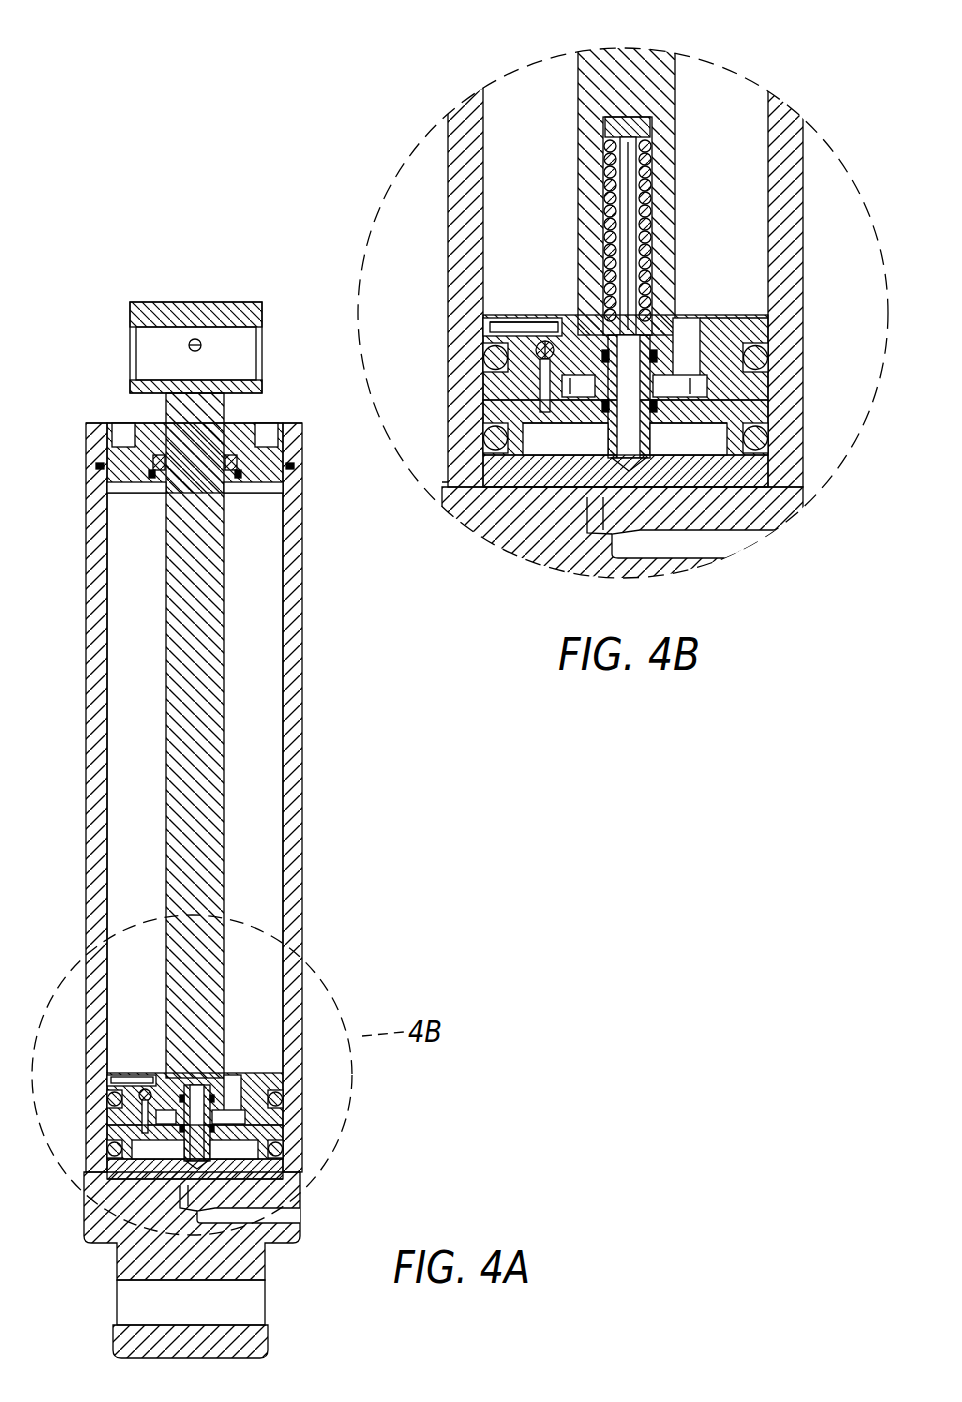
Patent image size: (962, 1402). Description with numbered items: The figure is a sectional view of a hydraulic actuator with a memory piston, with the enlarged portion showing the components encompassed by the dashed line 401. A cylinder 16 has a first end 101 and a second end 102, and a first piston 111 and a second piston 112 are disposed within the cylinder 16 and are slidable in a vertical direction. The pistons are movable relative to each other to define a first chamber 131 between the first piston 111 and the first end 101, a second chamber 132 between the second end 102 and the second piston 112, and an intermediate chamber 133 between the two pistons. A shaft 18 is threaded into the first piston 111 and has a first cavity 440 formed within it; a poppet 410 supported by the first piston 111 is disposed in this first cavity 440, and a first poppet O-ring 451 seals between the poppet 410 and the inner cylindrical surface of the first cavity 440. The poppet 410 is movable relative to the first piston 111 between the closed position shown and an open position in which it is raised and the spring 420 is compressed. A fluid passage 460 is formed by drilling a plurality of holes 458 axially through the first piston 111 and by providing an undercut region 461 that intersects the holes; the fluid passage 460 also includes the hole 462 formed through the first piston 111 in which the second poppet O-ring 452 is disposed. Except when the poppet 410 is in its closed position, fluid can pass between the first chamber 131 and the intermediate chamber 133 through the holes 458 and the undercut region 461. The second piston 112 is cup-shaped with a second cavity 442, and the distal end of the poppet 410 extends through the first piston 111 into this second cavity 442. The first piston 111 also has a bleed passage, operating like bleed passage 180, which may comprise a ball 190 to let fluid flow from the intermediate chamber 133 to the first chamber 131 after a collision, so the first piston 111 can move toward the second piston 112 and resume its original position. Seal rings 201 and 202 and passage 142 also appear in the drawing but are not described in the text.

In FIG. 4A, the cylinder 16 is at (300, 797).
In FIG. 4B, the cylinder 16 is at (800, 172).
In FIG. 4A, the shaft 18 is at (217, 647).
In FIG. 4B, the shaft 18 is at (668, 93).
In FIG. 4A, the first end 101 is at (247, 430).
In FIG. 4A, the second end 102 is at (110, 1215).
In FIG. 4A, the first piston 111 is at (254, 1075).
In FIG. 4B, the first piston 111 is at (490, 383).
In FIG. 4A, the second piston 112 is at (298, 1172).
In FIG. 4B, the second piston 112 is at (475, 466).
In FIG. 4A, the first chamber 131 is at (262, 722).
In FIG. 4A, the second chamber 132 is at (112, 1250).
In FIG. 4B, the second chamber 132 is at (553, 488).
In FIG. 4A, the intermediate chamber 133 is at (110, 1183).
In FIG. 4A, the fluid passage 142 is at (290, 1213).
In FIG. 4B, the fluid passage 142 is at (700, 540).
In FIG. 4B, the bleed passage 180 is at (520, 410).
In FIG. 4B, the ball 190 is at (545, 325).
In FIG. 4A, the seal ring 201 is at (281, 1100).
In FIG. 4B, the seal ring 201 is at (758, 362).
In FIG. 4A, the seal ring 202 is at (276, 1150).
In FIG. 4B, the seal ring 202 is at (758, 437).
In FIG. 4A, the dashed line 401 is at (322, 972).
In FIG. 4B, the poppet 410 is at (645, 300).
In FIG. 4B, the spring 420 is at (604, 180).
In FIG. 4B, the first cavity 440 is at (604, 205).
In FIG. 4B, the second cavity 442 is at (650, 457).
In FIG. 4B, the first poppet O-ring 451 is at (705, 395).
In FIG. 4B, the second poppet O-ring 452 is at (762, 478).
In FIG. 4B, the holes 458 is at (697, 335).
In FIG. 4B, the fluid passage 460 is at (700, 350).
In FIG. 4B, the undercut region 461 is at (488, 445).
In FIG. 4B, the hole 462 is at (530, 470).